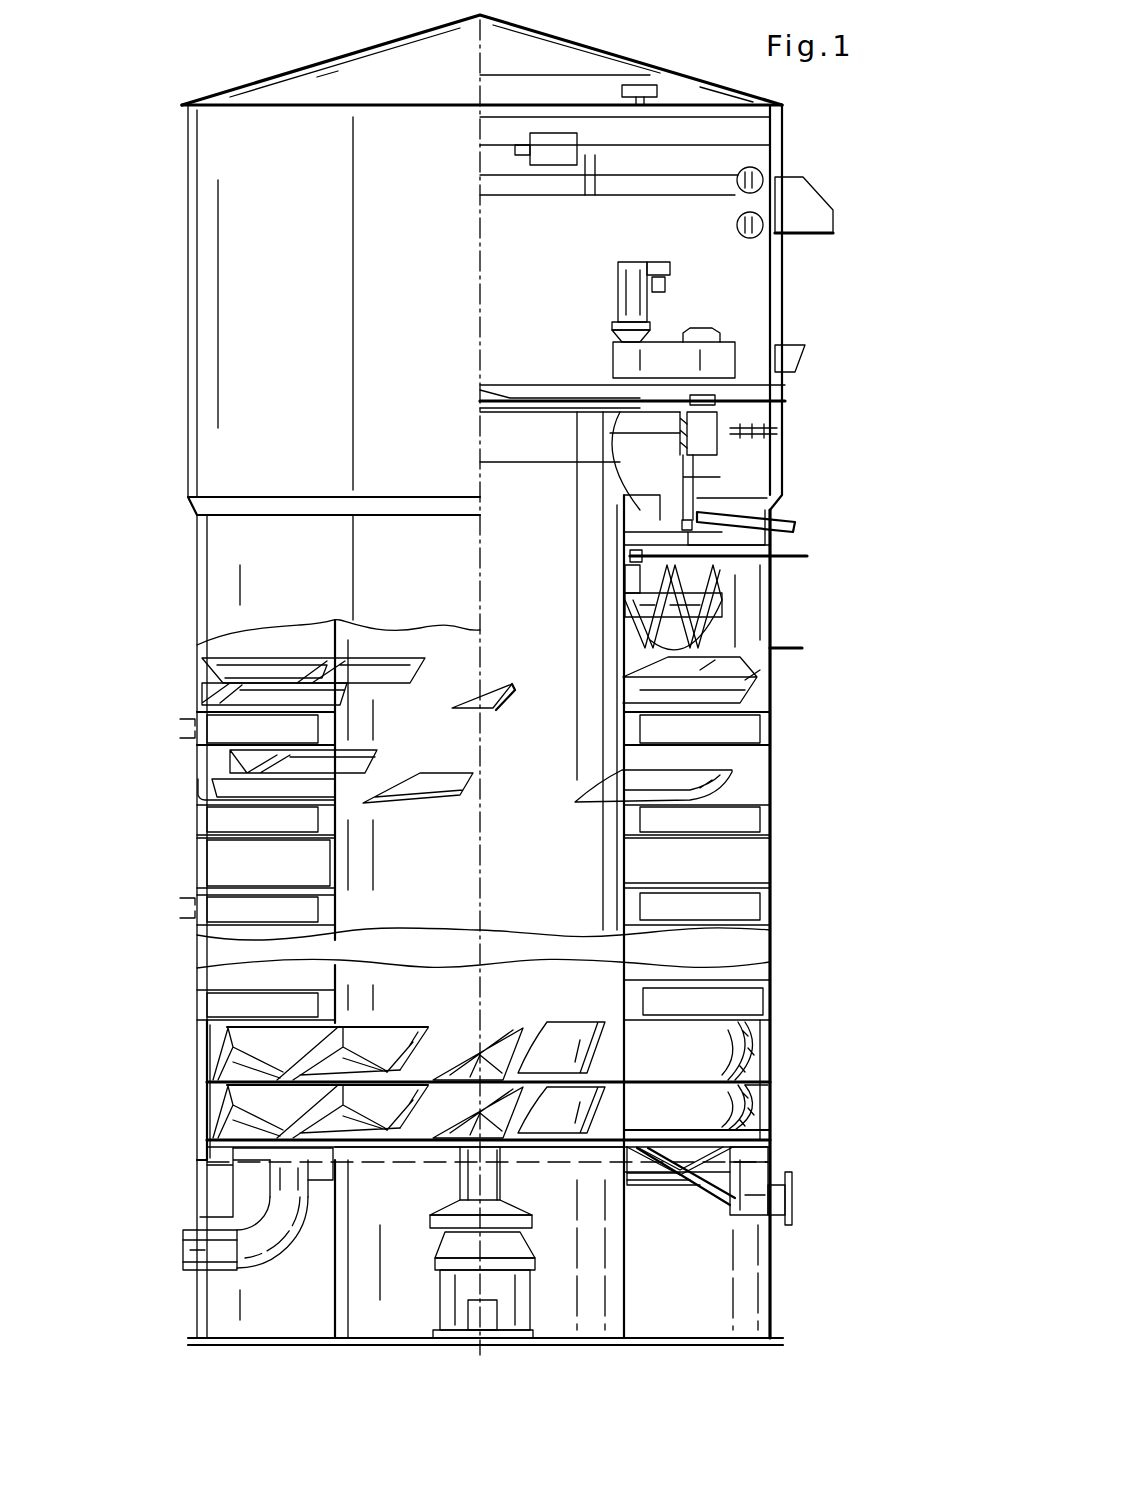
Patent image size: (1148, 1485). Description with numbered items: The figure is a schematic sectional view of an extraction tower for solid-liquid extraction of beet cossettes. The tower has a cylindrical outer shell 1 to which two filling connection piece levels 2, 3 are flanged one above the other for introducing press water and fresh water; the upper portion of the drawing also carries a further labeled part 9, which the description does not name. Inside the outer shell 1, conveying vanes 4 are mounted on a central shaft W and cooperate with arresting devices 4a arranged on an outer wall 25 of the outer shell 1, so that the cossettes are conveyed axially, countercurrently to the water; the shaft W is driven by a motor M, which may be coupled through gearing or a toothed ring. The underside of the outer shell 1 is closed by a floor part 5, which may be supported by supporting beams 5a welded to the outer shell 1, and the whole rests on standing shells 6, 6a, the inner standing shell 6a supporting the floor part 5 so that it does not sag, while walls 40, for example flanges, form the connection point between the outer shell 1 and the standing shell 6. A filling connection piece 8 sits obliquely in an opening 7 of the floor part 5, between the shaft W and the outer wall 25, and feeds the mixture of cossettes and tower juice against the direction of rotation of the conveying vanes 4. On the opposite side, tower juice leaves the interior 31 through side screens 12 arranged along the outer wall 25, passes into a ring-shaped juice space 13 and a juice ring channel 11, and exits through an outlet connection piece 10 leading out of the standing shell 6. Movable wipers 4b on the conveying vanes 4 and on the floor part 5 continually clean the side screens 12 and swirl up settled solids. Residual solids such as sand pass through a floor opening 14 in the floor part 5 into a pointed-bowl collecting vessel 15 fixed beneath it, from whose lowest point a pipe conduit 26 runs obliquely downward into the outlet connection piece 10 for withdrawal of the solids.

The outer shell 1 is at (785, 312).
The filling connection piece level 2 is at (197, 735).
The filling connection piece level 3 is at (197, 912).
The conveying vanes 4 is at (265, 673).
The arresting devices 4a is at (225, 822).
The movable wipers 4b is at (758, 1042).
The floor part 5 is at (403, 1148).
The supporting beams 5a is at (430, 1148).
The standing shell 6 is at (772, 1307).
The inner standing shell 6a is at (335, 1318).
The opening 7 is at (278, 1145).
The filling connection piece 8 is at (192, 1245).
The storage tank 9 is at (240, 349).
The outlet connection piece 10 is at (792, 1198).
The juice ring channel 11 is at (740, 1162).
The side screens 12 is at (213, 1106).
The juice space 13 is at (762, 1093).
The floor opening 14 is at (645, 1152).
The collecting vessel 15 is at (680, 1150).
The outer wall 25 is at (770, 1077).
The pipe conduit 26 is at (714, 1190).
The interior 31 is at (700, 891).
The walls 40 is at (325, 1182).
The motor M is at (635, 305).
The shaft W is at (607, 638).